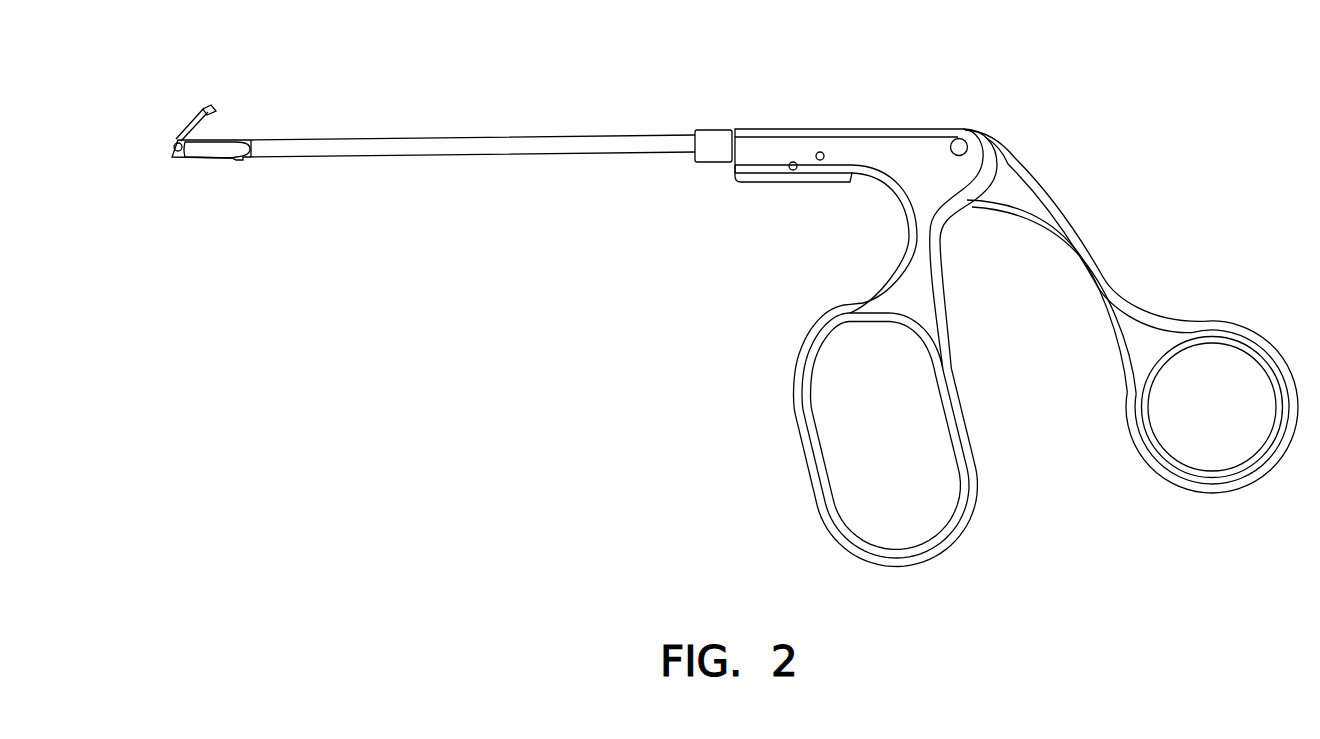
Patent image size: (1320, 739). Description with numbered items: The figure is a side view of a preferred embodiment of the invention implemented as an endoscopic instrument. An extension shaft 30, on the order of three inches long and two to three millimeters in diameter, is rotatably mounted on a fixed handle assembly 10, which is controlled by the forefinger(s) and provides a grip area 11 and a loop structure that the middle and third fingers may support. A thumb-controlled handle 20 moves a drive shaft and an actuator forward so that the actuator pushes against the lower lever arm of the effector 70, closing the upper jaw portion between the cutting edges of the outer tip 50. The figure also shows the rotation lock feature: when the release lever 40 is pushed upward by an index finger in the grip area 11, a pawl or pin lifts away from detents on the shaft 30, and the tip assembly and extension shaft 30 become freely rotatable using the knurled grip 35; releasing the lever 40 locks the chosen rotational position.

The fixed handle assembly 10 is at (897, 157).
The grip area 11 is at (927, 207).
The handle 20 is at (1147, 342).
The extension shaft 30 is at (330, 148).
The knurled grip 35 is at (712, 152).
The release lever 40 is at (781, 177).
The outer tip 50 is at (213, 150).
The effector 70 is at (184, 122).